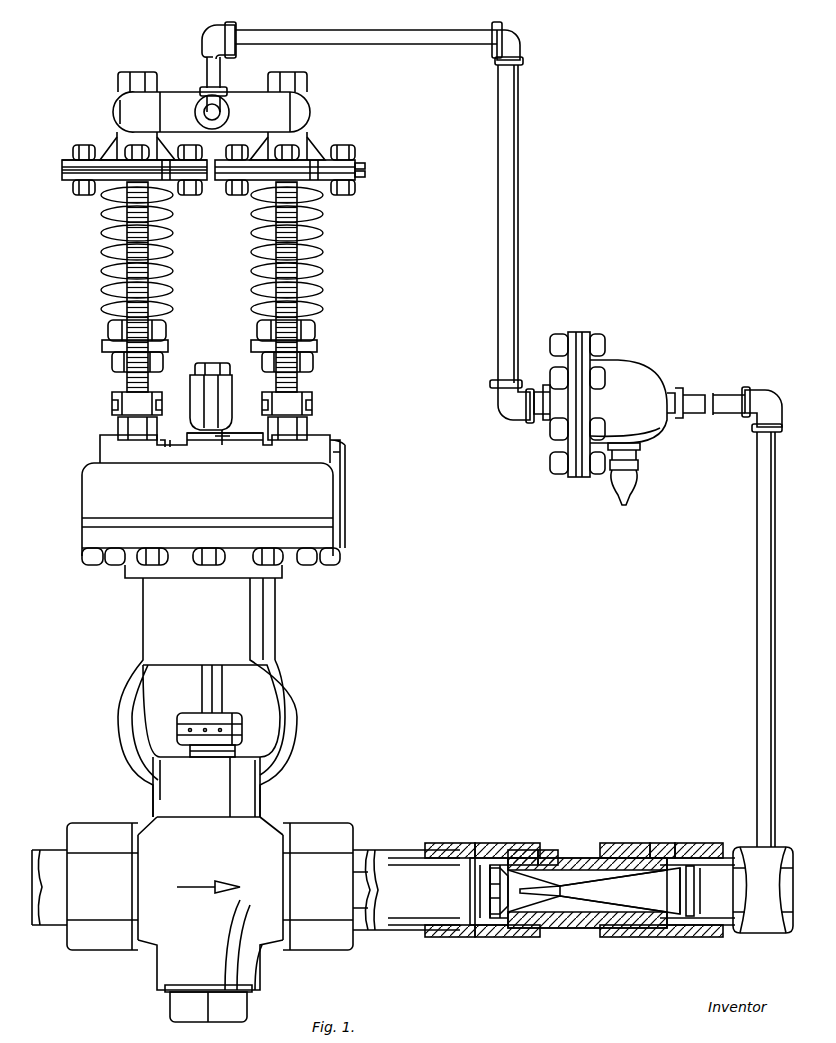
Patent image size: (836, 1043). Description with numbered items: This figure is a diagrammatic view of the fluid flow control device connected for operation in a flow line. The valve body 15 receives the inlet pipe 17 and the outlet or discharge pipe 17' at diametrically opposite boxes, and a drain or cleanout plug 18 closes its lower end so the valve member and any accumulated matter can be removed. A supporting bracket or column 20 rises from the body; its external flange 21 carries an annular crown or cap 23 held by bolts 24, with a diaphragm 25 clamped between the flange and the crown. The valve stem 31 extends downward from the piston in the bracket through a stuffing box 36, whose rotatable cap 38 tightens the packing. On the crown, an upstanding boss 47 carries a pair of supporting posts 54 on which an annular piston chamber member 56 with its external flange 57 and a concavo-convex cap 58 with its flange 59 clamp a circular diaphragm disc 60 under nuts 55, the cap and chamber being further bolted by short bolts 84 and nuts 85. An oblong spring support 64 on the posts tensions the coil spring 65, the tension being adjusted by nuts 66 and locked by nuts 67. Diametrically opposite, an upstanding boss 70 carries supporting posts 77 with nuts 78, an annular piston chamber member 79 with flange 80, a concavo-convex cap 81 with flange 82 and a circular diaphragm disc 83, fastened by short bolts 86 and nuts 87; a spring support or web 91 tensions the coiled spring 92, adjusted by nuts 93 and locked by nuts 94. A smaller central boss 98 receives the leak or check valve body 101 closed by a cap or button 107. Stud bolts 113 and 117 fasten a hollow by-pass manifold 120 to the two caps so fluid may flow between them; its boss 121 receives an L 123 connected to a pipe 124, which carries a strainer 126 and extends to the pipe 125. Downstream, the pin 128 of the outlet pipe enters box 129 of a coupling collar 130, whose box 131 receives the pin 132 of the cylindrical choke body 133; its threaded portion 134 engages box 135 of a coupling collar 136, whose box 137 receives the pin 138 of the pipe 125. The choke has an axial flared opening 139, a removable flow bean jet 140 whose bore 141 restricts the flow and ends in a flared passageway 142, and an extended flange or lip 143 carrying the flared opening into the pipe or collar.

The valve body 15 is at (210, 903).
The inlet pipe 17 is at (85, 882).
The outlet or discharge pipe 17' is at (340, 882).
The drain or cleanout plug 18 is at (208, 1003).
The supporting bracket or column 20 is at (290, 700).
The external flange 21 is at (207, 554).
The annular crown or cap 23 is at (207, 505).
The bolts 24 is at (82, 557).
The diaphragm 25 is at (82, 522).
The valve stem 31 is at (202, 695).
The stuffing box 36 is at (236, 750).
The rotatable cap 38 is at (238, 700).
The upstanding boss 47 is at (100, 448).
The supporting posts 54 is at (104, 262).
The nuts 55 is at (112, 150).
The annular piston chamber member 56 is at (108, 200).
The external flange 57 is at (60, 178).
The concavo-convex cap 58 is at (160, 152).
The flange 59 is at (62, 162).
The circular diaphragm disc 60 is at (62, 171).
The oblong spring support 64 is at (168, 346).
The coil spring 65 is at (150, 252).
The nuts 66 is at (112, 362).
The nuts 67 is at (108, 331).
The upstanding boss 70 is at (332, 452).
The supporting posts 77 is at (322, 255).
The nuts 78 is at (310, 148).
The annular piston chamber member 79 is at (252, 196).
The external flange 80 is at (358, 182).
The concavo-convex cap 81 is at (312, 150).
The flange 82 is at (365, 164).
The circular diaphragm disc 83 is at (366, 175).
The short bolts 84 is at (84, 146).
The nuts 85 is at (84, 196).
The short bolts 86 is at (348, 146).
The nuts 87 is at (340, 196).
The oblong spring support or web 91 is at (317, 346).
The coiled spring 92 is at (322, 290).
The nuts 93 is at (313, 366).
The nuts 94 is at (316, 332).
The smaller boss 98 is at (232, 440).
The leak or check valve body 101 is at (190, 400).
The cap or button 107 is at (212, 366).
The stud bolt 113 is at (147, 78).
The stud bolt 117 is at (290, 80).
The hollow by-pass manifold 120 is at (112, 106).
The boss 121 is at (198, 116).
The L 123 is at (200, 91).
The pipe 124 is at (430, 44).
The pipe 125 is at (763, 890).
The strainer 126 is at (619, 418).
The externally screw-threaded pin 128 is at (438, 940).
The internally screw-threaded box 129 is at (452, 938).
The coupling collar 130 is at (499, 938).
The internally screw-threaded box 131 is at (520, 850).
The externally screw-threaded pin 132 is at (540, 850).
The cylindrical choke body 133 is at (562, 850).
The externally screw-threaded portion 134 is at (614, 843).
The internally screw-threaded box 135 is at (658, 843).
The coupling collar 136 is at (644, 940).
The internally screw-threaded box 137 is at (688, 843).
The externally screw-threaded pin 138 is at (705, 848).
The axial flared opening 139 is at (645, 884).
The removable flow bean jet 140 is at (494, 868).
The bore 141 is at (470, 889).
The flared passageway 142 is at (524, 892).
The extended flange or lip 143 is at (694, 908).